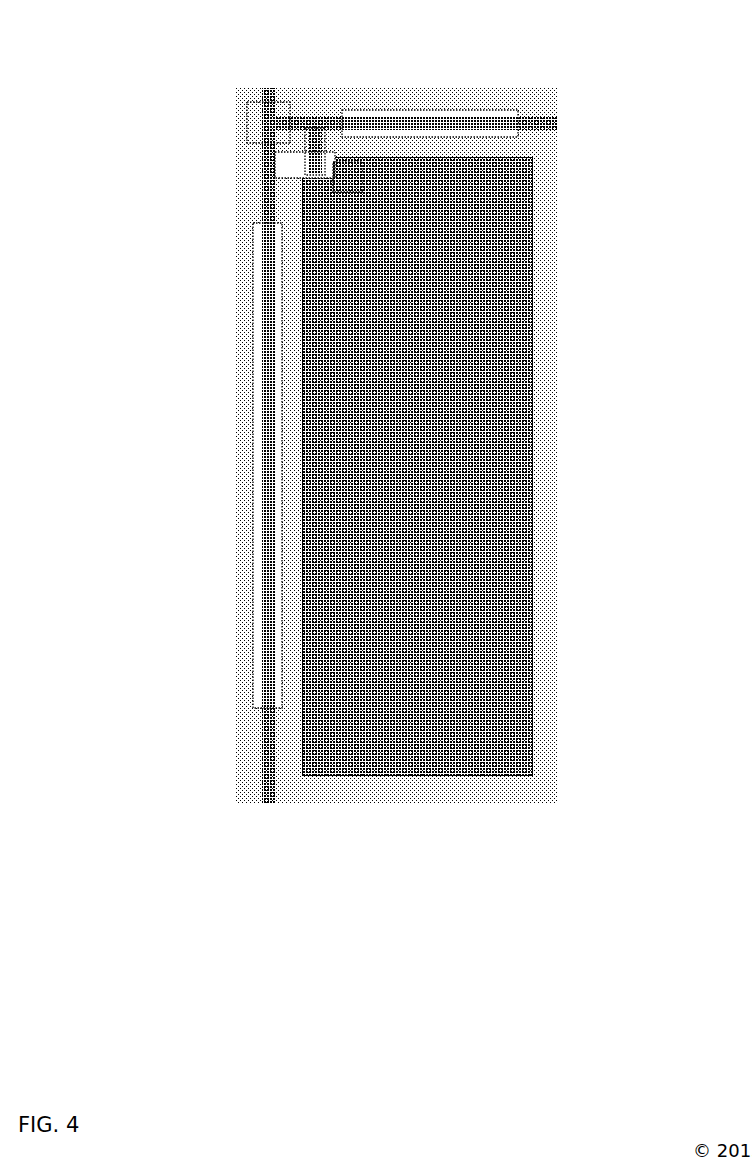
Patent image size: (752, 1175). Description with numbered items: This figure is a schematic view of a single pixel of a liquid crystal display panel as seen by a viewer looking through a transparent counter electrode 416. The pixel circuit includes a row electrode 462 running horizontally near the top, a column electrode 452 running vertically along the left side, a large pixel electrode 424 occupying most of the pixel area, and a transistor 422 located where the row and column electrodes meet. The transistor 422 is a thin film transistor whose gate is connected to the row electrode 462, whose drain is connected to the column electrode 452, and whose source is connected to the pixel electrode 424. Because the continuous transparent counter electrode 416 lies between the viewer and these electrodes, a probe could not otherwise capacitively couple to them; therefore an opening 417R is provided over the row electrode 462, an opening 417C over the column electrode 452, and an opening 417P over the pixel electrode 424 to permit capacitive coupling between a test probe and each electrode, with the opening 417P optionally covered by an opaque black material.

The transparent counter electrode 416 is at (550, 358).
The opening 417C is at (255, 332).
The opening 417P is at (335, 180).
The opening 417R is at (450, 110).
The transistor 422 is at (290, 148).
The pixel electrode 424 is at (532, 262).
The column electrode 452 is at (262, 760).
The row electrode 462 is at (538, 118).